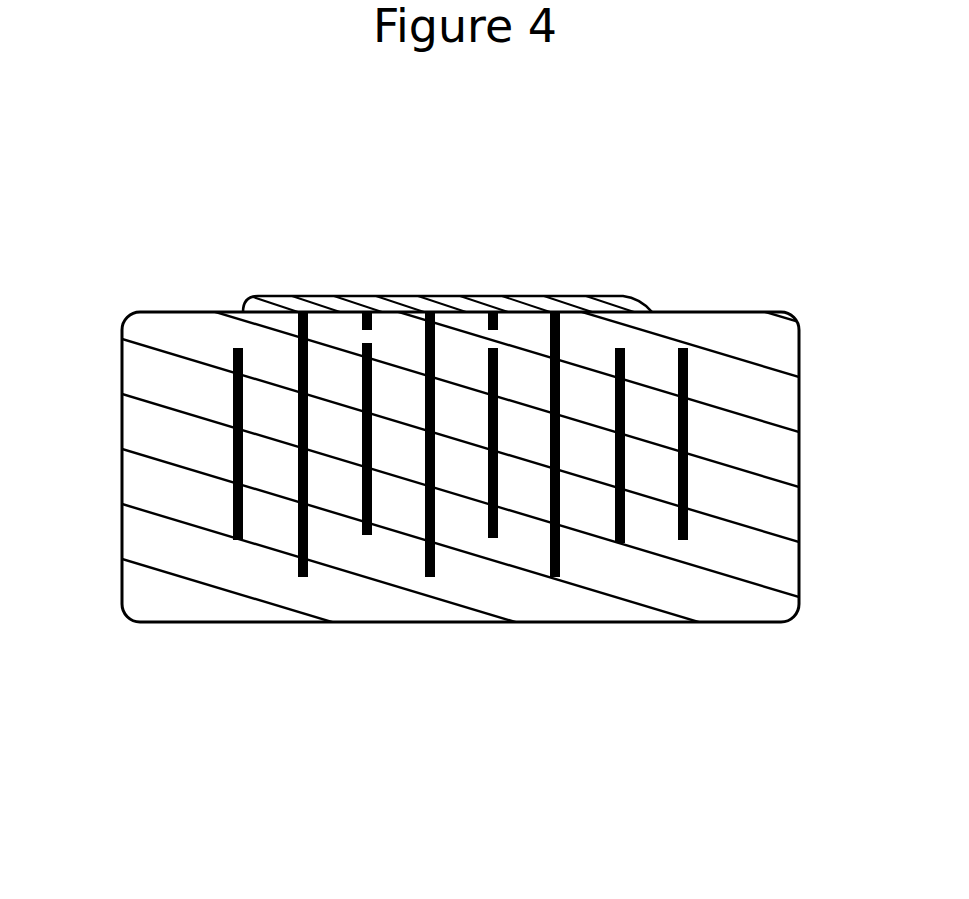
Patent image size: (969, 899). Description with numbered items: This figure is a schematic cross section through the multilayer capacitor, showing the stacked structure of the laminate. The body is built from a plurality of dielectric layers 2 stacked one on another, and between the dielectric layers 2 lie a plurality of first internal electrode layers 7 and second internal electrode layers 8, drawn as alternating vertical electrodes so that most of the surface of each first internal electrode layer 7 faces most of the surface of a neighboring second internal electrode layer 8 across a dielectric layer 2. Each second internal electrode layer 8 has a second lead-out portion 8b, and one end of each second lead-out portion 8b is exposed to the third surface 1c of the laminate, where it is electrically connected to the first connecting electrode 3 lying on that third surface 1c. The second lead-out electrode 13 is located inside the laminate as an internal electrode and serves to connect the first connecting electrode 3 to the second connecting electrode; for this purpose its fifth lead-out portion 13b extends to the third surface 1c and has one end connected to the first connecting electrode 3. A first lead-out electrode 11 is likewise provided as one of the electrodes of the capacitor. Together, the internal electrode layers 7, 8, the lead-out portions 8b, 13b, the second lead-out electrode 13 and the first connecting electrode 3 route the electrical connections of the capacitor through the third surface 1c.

The dielectric layer 2 is at (757, 487).
The first connecting electrode 3 is at (540, 305).
The third surface 1c is at (462, 303).
The first internal electrode layer 7 is at (235, 427).
The second internal electrode layer 8 is at (307, 578).
The second lead-out portion 8b is at (283, 311).
The first lead-out electrode 11 is at (683, 541).
The second lead-out electrode 13 is at (555, 578).
The fifth lead-out portion 13b is at (562, 305).